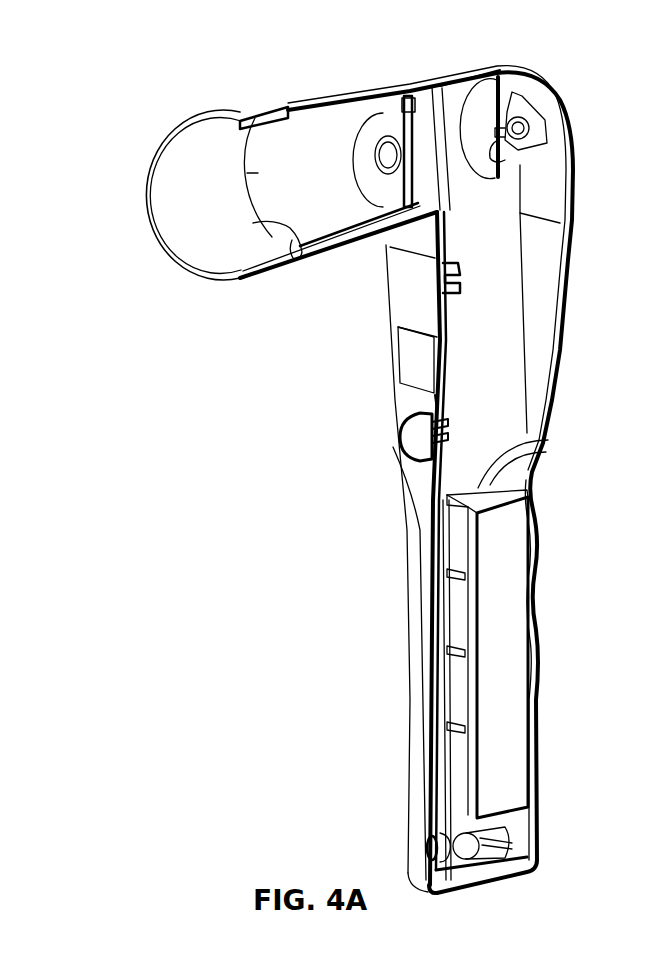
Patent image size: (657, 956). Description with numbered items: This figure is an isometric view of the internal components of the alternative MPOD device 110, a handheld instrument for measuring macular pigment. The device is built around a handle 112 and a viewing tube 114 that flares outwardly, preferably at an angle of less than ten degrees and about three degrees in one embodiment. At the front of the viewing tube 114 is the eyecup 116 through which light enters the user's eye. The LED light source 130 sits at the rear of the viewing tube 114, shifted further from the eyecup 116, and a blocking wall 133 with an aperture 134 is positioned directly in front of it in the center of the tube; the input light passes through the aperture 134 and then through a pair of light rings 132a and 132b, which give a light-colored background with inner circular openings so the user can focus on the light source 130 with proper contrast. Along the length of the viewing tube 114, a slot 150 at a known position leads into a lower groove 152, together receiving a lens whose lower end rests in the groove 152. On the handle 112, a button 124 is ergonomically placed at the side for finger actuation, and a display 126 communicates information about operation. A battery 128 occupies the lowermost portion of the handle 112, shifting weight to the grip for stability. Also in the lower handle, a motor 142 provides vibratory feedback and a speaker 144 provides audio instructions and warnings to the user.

The MPOD device 110 is at (155, 88).
The handle 112 is at (418, 603).
The viewing tube 114 is at (320, 255).
The eyecup 116 is at (225, 272).
The button 124 is at (402, 429).
The display 126 is at (408, 356).
The battery 128 is at (503, 552).
The LED light source 130 is at (524, 120).
The light ring 132a is at (375, 132).
The light ring 132b is at (438, 123).
The blocking wall 133 is at (506, 72).
The aperture 134 is at (500, 152).
The motor 142 is at (492, 838).
The speaker 144 is at (428, 844).
The slot 150 is at (298, 108).
The groove 152 is at (232, 224).